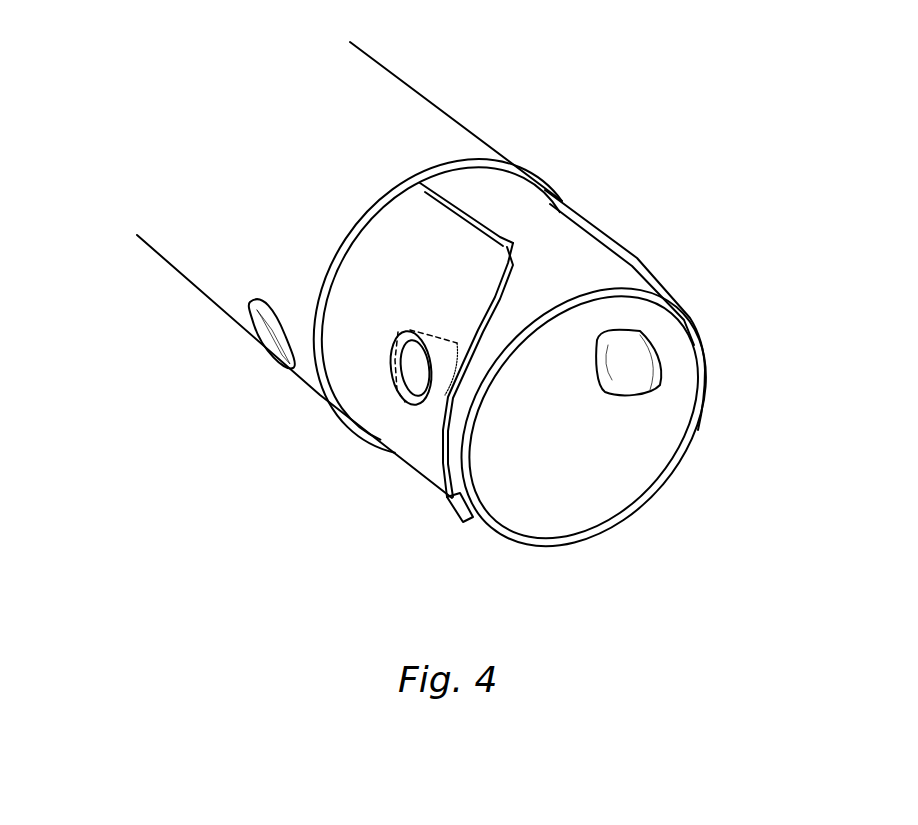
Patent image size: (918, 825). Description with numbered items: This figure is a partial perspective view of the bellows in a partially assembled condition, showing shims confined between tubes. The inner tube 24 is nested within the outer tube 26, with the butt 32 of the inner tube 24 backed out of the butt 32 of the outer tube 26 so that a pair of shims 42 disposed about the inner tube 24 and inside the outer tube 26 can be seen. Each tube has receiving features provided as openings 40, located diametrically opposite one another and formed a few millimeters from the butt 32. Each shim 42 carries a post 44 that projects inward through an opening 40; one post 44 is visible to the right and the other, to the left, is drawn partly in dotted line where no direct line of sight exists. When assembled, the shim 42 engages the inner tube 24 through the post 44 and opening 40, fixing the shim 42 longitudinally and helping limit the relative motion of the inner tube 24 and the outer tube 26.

The inner tube 24 is at (453, 494).
The outer tube 26 is at (445, 107).
The butt 32 is at (368, 212).
The opening 40 is at (252, 300).
The shim 42 is at (518, 280).
The post 44 is at (397, 327).